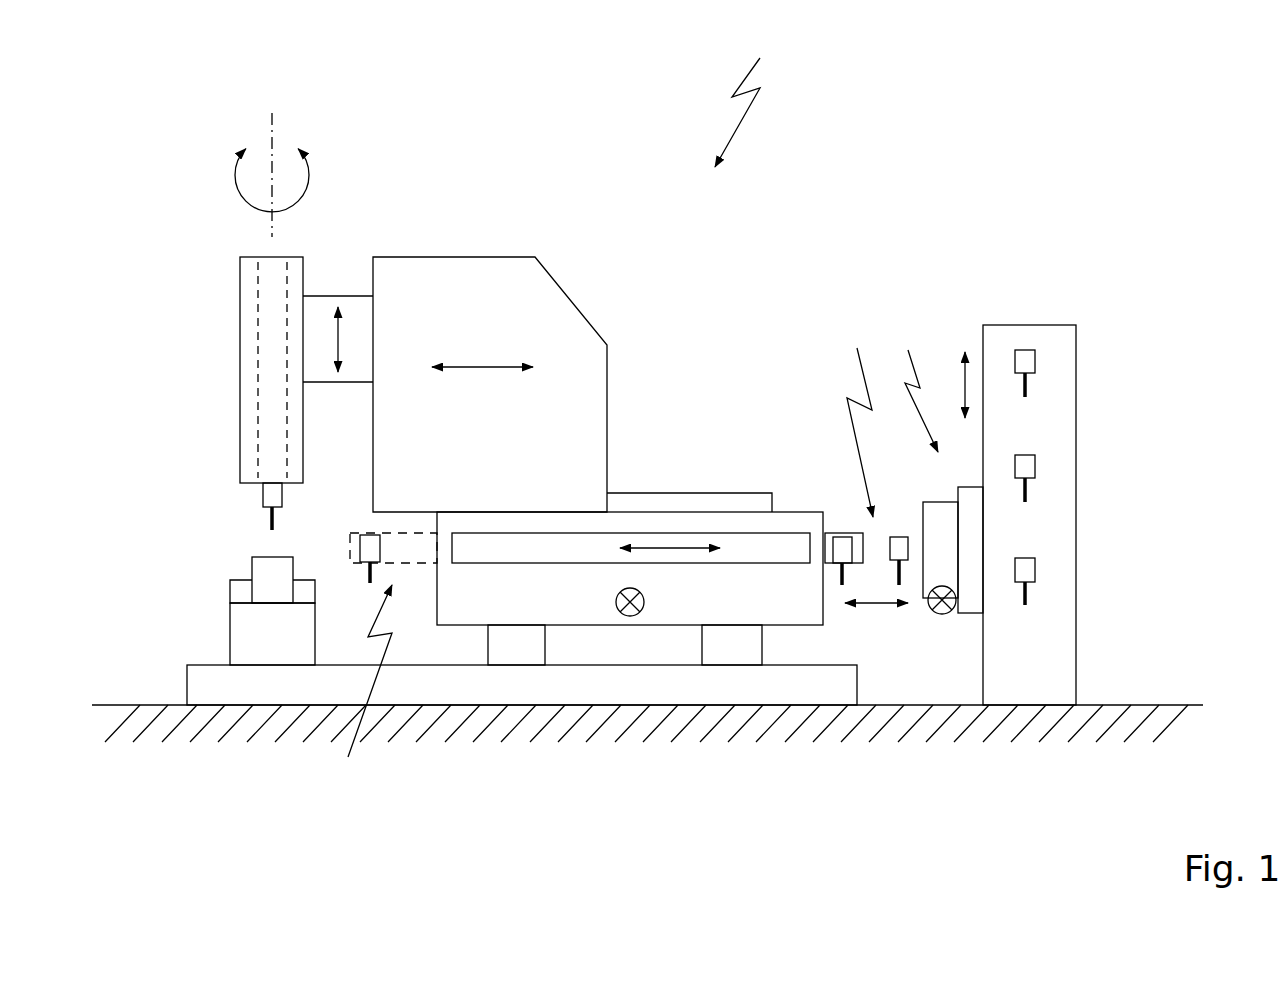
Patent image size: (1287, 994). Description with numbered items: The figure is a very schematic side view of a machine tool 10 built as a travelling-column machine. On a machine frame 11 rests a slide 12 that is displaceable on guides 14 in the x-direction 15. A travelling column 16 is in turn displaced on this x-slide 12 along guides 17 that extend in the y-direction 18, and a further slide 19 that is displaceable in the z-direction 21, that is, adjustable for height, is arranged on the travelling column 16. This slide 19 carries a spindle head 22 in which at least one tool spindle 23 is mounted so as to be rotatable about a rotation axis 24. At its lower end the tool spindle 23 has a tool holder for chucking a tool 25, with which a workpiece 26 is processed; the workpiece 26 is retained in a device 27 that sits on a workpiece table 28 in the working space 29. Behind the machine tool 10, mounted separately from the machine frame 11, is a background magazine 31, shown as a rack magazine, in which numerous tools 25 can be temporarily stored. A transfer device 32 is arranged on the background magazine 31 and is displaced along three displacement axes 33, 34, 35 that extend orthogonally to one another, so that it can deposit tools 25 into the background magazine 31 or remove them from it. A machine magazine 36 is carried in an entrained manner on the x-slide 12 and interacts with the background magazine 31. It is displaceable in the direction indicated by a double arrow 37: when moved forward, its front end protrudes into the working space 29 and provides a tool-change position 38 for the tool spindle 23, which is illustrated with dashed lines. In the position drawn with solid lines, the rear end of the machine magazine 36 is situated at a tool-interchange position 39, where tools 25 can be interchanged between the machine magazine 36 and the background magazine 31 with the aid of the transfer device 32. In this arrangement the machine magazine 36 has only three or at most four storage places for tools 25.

The machine tool 10 is at (749, 99).
The machine frame 11 is at (438, 688).
The slide 12 is at (690, 600).
The guides 14 is at (530, 650).
The x-direction 15 is at (616, 606).
The travelling column 16 is at (582, 405).
The guides 17 is at (632, 495).
The y-direction 18 is at (485, 367).
The slide 19 is at (375, 343).
The z-direction 21 is at (343, 327).
The spindle head 22 is at (242, 303).
The tool spindle 23 is at (273, 378).
The rotation axis 24 is at (306, 188).
The tool 25 is at (276, 503).
The workpiece 26 is at (260, 570).
The device 27 is at (240, 590).
The workpiece table 28 is at (242, 638).
The working space 29 is at (310, 532).
The background magazine 31 is at (1057, 350).
The transfer device 32 is at (936, 467).
The displacement axis 33 is at (965, 373).
The displacement axis 34 is at (930, 607).
The displacement axis 35 is at (873, 605).
The machine magazine 36 is at (808, 550).
The double arrow 37 is at (668, 548).
The tool-change position 38 is at (358, 686).
The tool-interchange position 39 is at (849, 453).